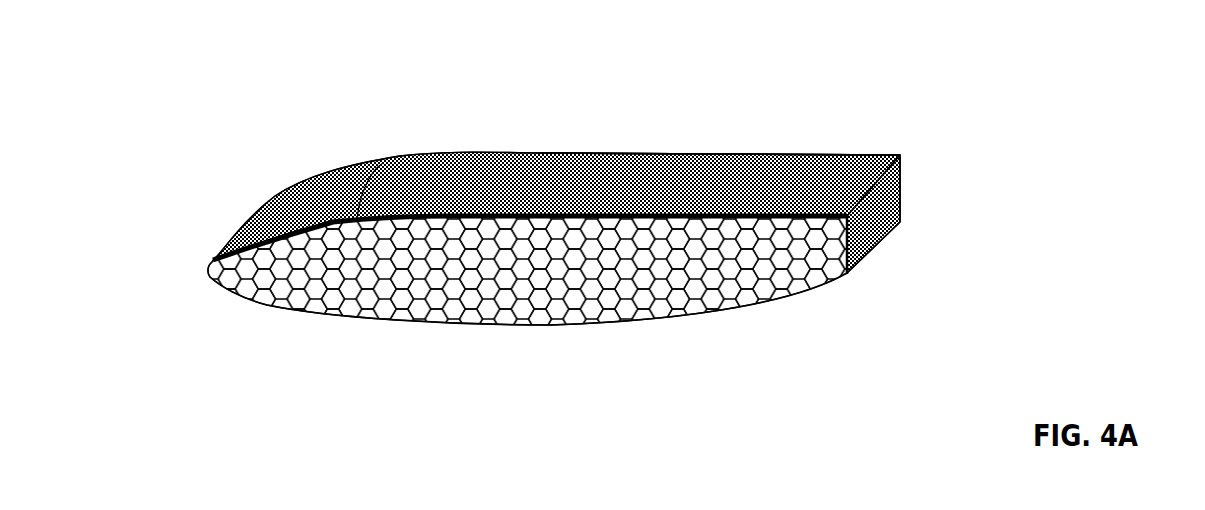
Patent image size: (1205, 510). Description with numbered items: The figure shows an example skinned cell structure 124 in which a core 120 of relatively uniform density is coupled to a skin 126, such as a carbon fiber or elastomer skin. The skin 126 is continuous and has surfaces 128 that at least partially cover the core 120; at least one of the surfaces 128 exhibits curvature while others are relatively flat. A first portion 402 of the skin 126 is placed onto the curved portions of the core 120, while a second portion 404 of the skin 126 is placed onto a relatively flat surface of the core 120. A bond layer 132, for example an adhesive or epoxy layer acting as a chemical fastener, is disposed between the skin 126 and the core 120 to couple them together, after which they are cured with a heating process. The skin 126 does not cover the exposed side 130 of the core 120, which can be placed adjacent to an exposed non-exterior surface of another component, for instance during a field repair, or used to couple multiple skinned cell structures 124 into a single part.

The skinned cell structure 124 is at (203, 97).
The core 120 is at (308, 307).
The skin 126 is at (553, 149).
The surfaces 128 is at (720, 154).
The exposed side 130 is at (697, 295).
The bond layer 132 is at (383, 163).
The first portion of the skin 402 is at (633, 154).
The second portion of the skin 404 is at (878, 245).